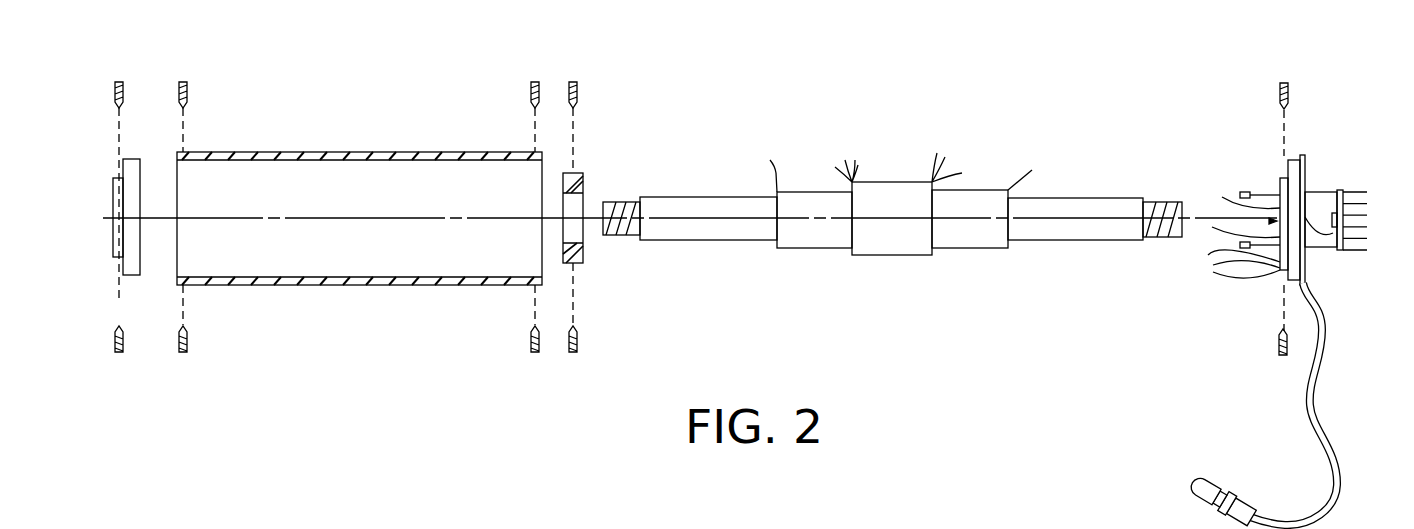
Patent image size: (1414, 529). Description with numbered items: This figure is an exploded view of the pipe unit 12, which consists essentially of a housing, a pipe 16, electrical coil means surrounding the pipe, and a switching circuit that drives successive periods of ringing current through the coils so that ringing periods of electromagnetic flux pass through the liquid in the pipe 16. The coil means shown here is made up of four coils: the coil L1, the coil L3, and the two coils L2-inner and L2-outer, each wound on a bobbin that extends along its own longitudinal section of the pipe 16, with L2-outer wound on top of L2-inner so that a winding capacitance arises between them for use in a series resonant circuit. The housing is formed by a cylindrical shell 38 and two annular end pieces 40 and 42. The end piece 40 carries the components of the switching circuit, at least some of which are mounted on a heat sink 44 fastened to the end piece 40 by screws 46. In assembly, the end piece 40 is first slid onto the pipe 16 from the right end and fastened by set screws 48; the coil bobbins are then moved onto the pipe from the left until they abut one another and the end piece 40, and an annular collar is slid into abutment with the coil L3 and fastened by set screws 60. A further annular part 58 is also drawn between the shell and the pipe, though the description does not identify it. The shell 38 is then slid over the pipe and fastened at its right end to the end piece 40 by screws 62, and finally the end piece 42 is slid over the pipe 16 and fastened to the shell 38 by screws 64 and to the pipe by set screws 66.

The pipe unit 12 is at (633, 120).
The pipe 16 is at (1108, 208).
The cylindrical shell 38 is at (358, 152).
The end piece 40 is at (1308, 180).
The end piece 42 is at (135, 172).
The heat sink 44 is at (1345, 250).
The screws 46 is at (1252, 194).
The set screws 48 is at (1290, 95).
The bearing plate 58 is at (585, 185).
The set screws 60 is at (577, 92).
The screws 62 is at (531, 88).
The screws 64 is at (188, 90).
The set screws 66 is at (115, 88).
The coil L1 is at (978, 240).
The coils L2-inner and L2-outer L2 is at (867, 255).
The coil L3 is at (803, 240).